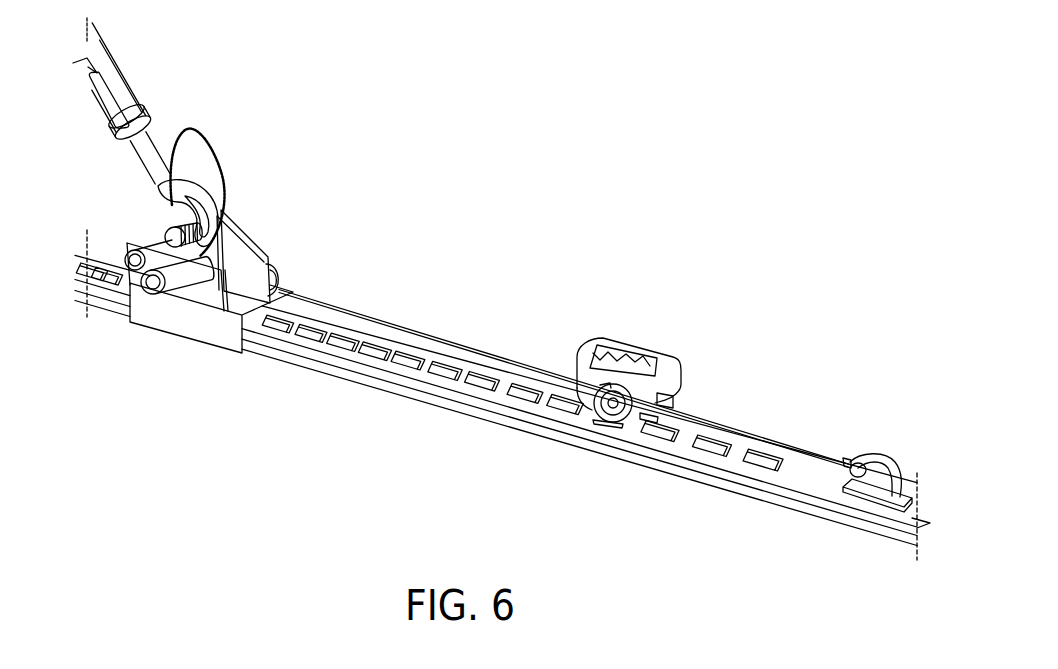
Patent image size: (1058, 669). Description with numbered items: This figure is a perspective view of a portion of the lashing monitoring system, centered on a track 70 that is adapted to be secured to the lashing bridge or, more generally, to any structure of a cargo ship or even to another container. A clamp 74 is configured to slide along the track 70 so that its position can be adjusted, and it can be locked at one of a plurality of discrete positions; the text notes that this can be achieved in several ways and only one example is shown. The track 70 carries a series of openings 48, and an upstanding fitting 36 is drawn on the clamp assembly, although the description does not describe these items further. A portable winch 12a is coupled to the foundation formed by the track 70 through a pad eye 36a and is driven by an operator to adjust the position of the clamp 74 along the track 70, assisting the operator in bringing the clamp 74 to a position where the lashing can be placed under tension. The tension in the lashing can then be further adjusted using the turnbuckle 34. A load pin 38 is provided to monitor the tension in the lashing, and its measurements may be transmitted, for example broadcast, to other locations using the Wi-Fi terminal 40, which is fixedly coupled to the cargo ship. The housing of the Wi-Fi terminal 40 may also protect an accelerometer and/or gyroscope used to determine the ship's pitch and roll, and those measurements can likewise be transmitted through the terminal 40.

The portable winch 12a is at (627, 370).
The turnbuckle 34 is at (148, 128).
The tool attachment bracket 36 is at (232, 242).
The pad eye 36a is at (877, 458).
The load pin 38 is at (170, 236).
The Wi-Fi terminal 40 is at (150, 292).
The slots 48 is at (408, 352).
The track 70 is at (443, 393).
The clamp 74 is at (198, 325).